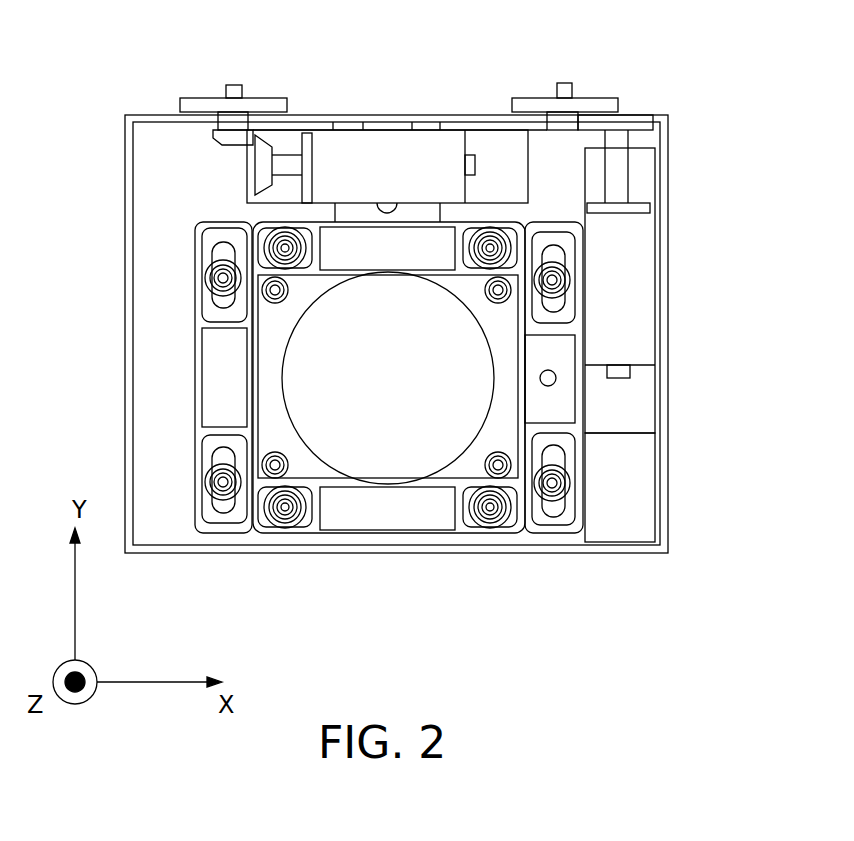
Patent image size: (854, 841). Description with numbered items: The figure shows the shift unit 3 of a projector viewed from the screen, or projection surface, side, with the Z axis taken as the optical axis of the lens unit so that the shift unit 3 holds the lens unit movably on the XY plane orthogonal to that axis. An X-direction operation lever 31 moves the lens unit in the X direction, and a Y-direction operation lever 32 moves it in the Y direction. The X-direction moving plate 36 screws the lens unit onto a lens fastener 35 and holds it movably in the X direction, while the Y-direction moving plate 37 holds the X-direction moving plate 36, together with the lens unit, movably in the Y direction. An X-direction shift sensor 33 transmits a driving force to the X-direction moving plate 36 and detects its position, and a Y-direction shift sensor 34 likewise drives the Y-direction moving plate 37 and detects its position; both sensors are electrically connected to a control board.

The shift unit 3 is at (123, 118).
The X-direction operation lever 31 is at (233, 92).
The Y-direction operation lever 32 is at (572, 87).
The X-direction shift sensor 33 is at (345, 160).
The Y-direction shift sensor 34 is at (640, 297).
The lens fastener 35 is at (275, 290).
The X-direction moving plate 36 is at (312, 527).
The Y-direction moving plate 37 is at (575, 455).